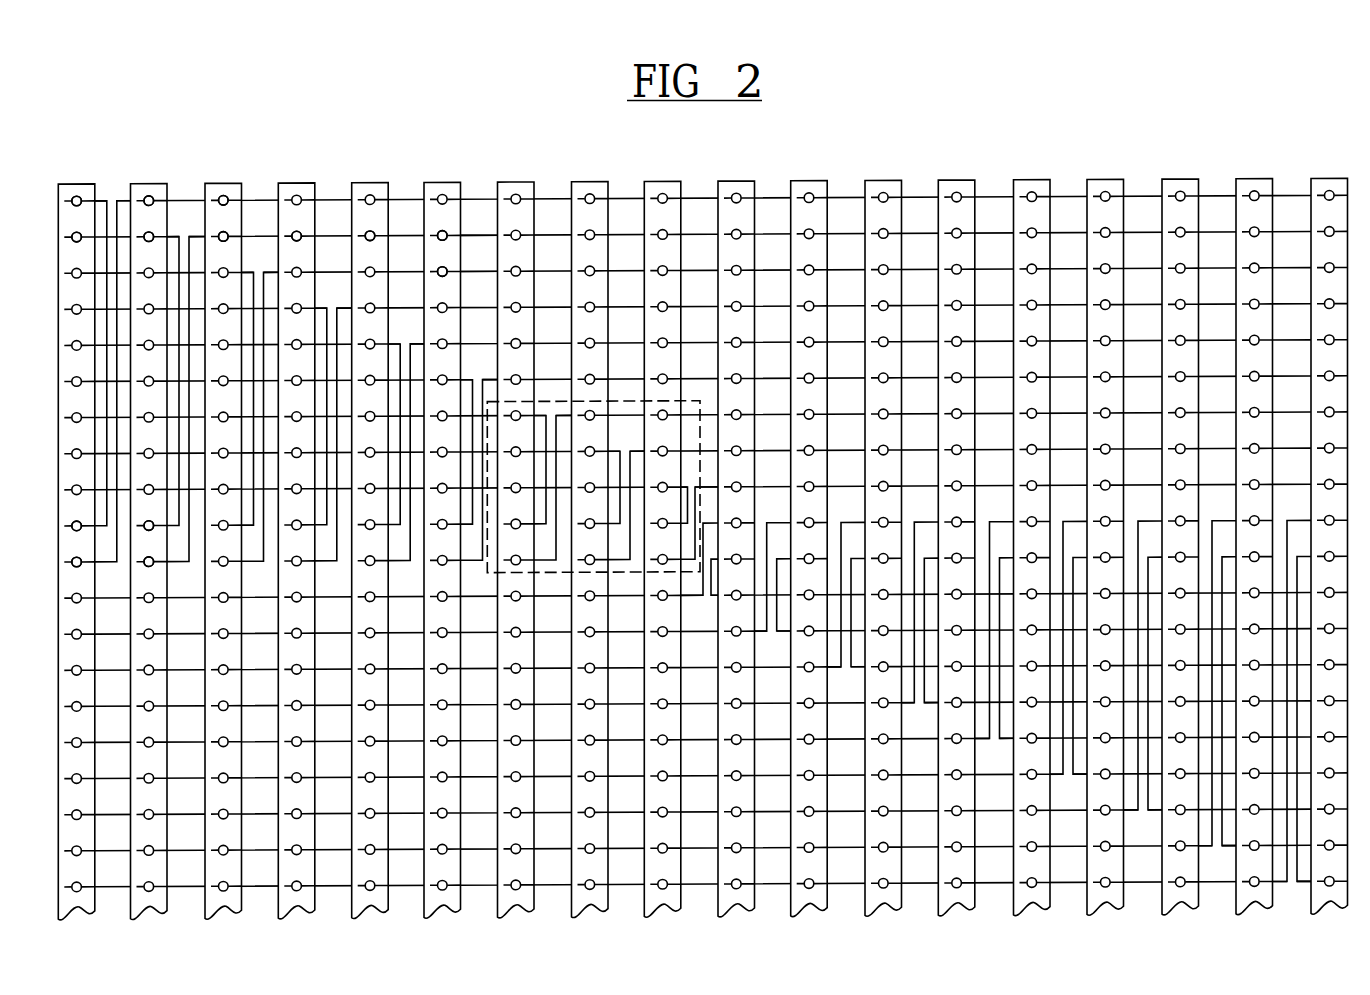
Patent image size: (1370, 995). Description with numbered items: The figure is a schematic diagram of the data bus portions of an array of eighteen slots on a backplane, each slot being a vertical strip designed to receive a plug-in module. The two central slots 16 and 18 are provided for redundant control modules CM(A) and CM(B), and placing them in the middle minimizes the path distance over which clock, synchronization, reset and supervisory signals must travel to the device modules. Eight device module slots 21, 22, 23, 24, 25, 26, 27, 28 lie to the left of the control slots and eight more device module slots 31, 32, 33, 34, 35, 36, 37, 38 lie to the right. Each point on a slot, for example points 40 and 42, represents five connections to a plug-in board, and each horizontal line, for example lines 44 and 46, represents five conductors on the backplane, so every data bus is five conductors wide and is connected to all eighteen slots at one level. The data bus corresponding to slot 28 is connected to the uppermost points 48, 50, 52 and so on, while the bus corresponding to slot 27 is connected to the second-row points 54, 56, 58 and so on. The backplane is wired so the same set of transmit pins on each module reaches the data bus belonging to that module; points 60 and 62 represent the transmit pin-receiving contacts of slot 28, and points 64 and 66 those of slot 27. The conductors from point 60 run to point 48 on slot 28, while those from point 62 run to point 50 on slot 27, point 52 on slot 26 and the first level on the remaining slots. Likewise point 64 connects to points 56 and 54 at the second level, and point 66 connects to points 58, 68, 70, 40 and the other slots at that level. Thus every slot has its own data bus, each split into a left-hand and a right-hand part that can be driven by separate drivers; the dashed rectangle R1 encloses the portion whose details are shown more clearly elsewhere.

The central slot 16 is at (647, 184).
The central slot 18 is at (721, 184).
The device module slot 21 is at (574, 184).
The device module slot 22 is at (500, 184).
The device module slot 23 is at (427, 184).
The device module slot 24 is at (355, 184).
The device module slot 25 is at (281, 184).
The device module slot 26 is at (208, 184).
The device module slot 27 is at (134, 184).
The device module slot 28 is at (61, 184).
The device module slot 31 is at (794, 184).
The device module slot 32 is at (868, 184).
The device module slot 33 is at (941, 184).
The device module slot 34 is at (1016, 184).
The device module slot 35 is at (1090, 184).
The device module slot 36 is at (1165, 184).
The device module slot 37 is at (1239, 184).
The device module slot 38 is at (1314, 184).
The point 40 is at (440, 244).
The point 42 is at (440, 279).
The line 44 is at (480, 239).
The line 46 is at (480, 275).
The point 48 is at (80, 196).
The point 50 is at (152, 196).
The point 52 is at (227, 196).
The point 54 is at (73, 234).
The point 56 is at (152, 232).
The point 58 is at (226, 232).
The transmit pin-receiving contact point 60 is at (73, 523).
The transmit pin-receiving contact point 62 is at (73, 559).
The transmit pin-receiving contact point 64 is at (144, 532).
The transmit pin-receiving contact point 66 is at (152, 567).
The point 68 is at (300, 232).
The point 70 is at (374, 232).
The rectangle R1 is at (625, 576).